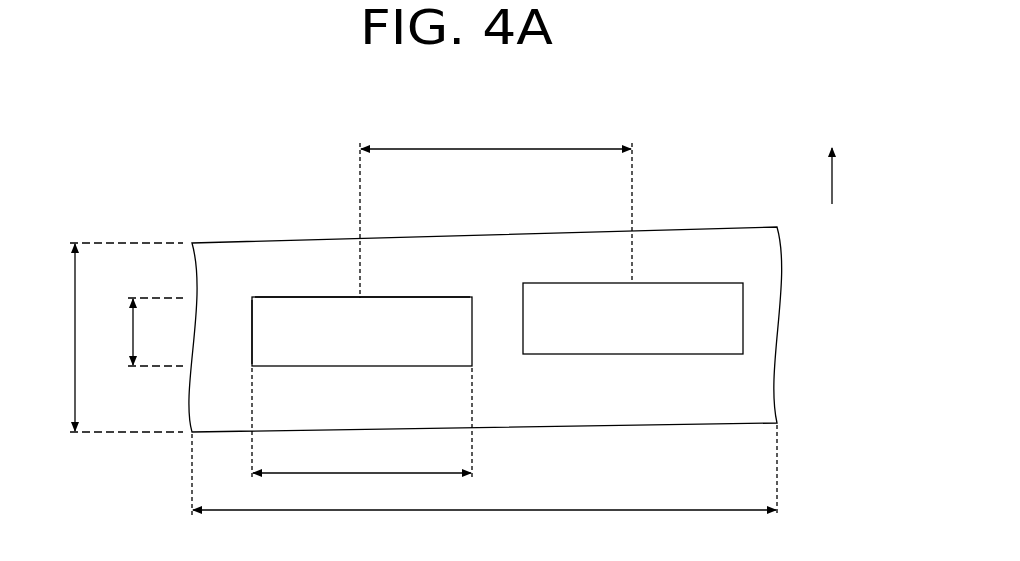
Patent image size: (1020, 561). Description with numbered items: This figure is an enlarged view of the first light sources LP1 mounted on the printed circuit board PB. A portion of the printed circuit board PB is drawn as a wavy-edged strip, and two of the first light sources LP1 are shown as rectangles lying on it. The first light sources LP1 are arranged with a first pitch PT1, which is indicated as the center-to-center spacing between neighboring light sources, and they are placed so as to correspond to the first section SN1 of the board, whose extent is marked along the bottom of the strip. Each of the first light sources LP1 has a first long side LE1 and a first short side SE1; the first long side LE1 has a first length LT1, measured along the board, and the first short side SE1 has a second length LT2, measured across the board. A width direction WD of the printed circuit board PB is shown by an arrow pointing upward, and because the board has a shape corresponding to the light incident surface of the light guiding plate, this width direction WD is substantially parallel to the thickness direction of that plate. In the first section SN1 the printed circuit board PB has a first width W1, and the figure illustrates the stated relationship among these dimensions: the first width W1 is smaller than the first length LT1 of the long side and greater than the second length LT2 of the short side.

The printed circuit board PB is at (779, 280).
The first light sources LP1 is at (317, 155).
The first short side SE1 is at (228, 298).
The first long side LE1 is at (293, 297).
The first pitch PT1 is at (496, 211).
The width direction WD is at (855, 176).
The first width W1 is at (113, 337).
The second length LT2 is at (136, 332).
The first length LT1 is at (362, 434).
The first section SN1 is at (484, 481).